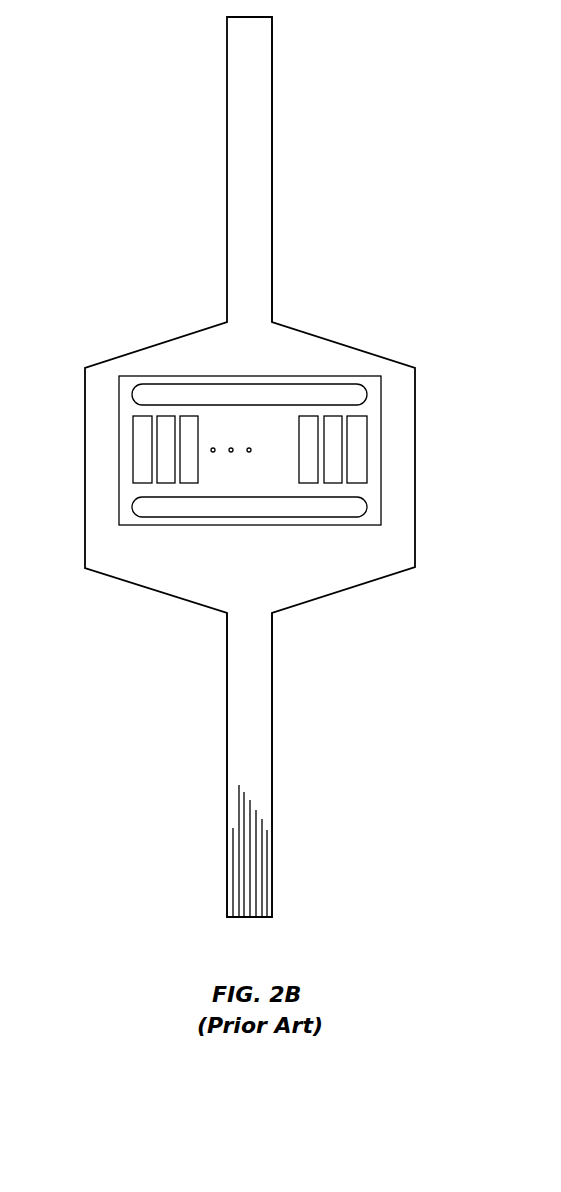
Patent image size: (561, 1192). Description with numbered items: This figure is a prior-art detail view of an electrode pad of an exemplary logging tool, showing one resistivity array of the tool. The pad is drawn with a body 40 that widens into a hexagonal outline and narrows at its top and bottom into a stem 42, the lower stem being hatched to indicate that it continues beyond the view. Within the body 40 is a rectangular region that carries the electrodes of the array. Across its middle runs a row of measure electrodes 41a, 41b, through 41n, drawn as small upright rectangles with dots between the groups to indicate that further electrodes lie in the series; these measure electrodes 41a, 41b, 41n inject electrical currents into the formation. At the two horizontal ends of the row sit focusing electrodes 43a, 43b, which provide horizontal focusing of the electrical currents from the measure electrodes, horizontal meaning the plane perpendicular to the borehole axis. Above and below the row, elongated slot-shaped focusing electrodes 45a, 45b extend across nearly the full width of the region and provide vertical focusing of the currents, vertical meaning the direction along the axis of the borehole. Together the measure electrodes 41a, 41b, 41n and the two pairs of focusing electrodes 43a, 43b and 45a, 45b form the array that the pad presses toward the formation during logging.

The sensor body 40 is at (303, 332).
The lead portion 42 is at (272, 212).
The measure electrode 41a is at (168, 433).
The measure electrode 41b is at (188, 470).
The measure electrode 41n is at (332, 433).
The focusing electrode 43a is at (140, 444).
The focusing electrode 43b is at (361, 443).
The focusing electrode 45a is at (204, 375).
The focusing electrode 45b is at (358, 503).